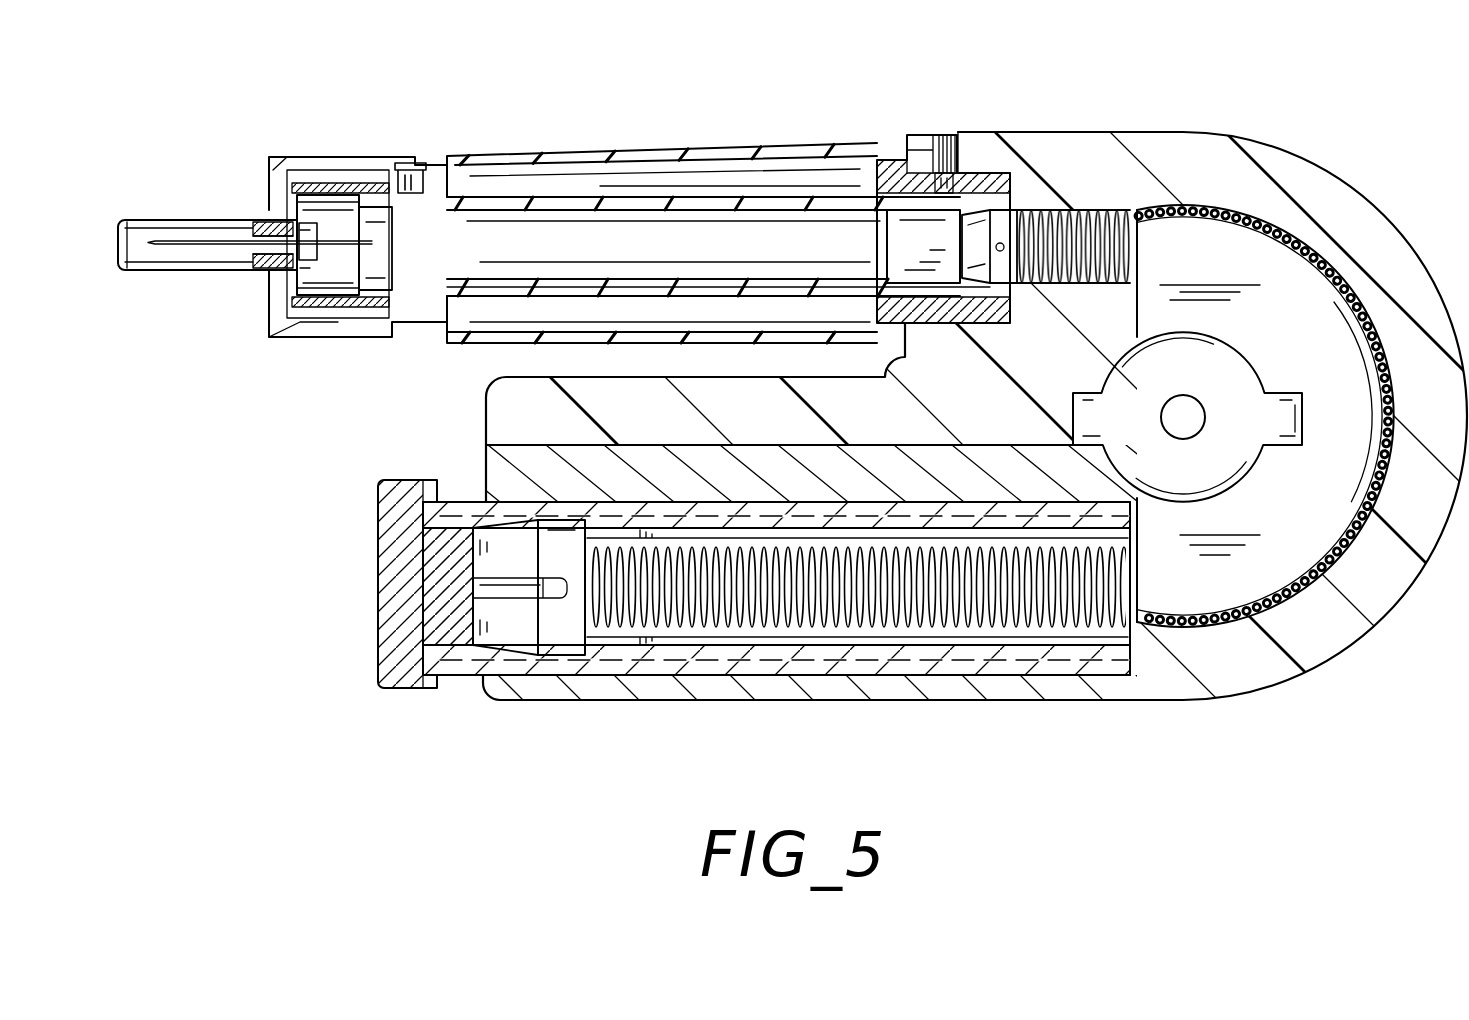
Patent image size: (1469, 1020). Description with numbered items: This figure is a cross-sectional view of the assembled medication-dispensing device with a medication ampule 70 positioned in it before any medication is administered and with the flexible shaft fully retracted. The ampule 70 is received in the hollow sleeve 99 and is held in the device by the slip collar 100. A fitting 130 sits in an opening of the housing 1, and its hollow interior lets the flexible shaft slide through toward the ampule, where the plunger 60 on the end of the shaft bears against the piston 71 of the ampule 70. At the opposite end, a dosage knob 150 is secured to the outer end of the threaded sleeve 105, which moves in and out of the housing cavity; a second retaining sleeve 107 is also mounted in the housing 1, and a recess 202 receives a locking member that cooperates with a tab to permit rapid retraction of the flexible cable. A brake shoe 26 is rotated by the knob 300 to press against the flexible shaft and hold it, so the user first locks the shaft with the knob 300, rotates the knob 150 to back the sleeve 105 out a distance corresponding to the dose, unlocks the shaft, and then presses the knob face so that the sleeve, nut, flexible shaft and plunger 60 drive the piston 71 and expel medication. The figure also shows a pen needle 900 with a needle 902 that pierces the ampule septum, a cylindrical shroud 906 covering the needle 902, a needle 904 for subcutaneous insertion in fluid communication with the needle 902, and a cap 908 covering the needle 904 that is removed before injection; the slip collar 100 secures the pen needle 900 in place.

The housing 1 is at (1280, 167).
The brake shoe 26 is at (1160, 595).
The plunger 60 is at (1037, 200).
The medication ampule 70 is at (633, 200).
The piston 71 is at (921, 235).
The sleeve 99 is at (500, 150).
The slip collar 100 is at (340, 157).
The sleeve 105 is at (462, 652).
The second retaining sleeve 107 is at (580, 675).
The fitting 130 is at (862, 172).
The dosage knob 150 is at (385, 578).
The recess 202 is at (885, 445).
The knob 300 is at (1197, 465).
The pen needle 900 is at (262, 262).
The needle 902 is at (336, 285).
The needle 904 is at (207, 236).
The cylindrical shroud 906 is at (320, 277).
The cap 908 is at (152, 220).